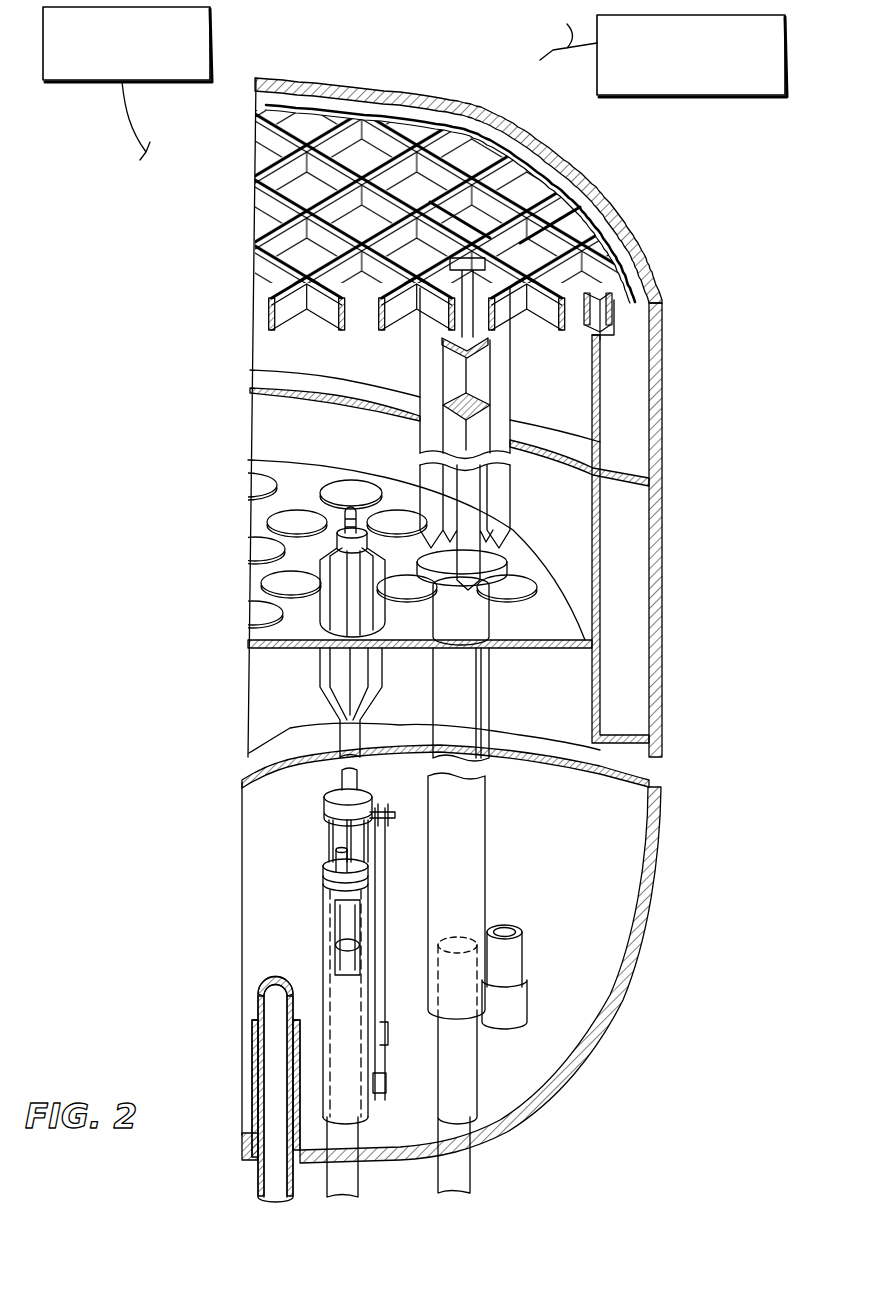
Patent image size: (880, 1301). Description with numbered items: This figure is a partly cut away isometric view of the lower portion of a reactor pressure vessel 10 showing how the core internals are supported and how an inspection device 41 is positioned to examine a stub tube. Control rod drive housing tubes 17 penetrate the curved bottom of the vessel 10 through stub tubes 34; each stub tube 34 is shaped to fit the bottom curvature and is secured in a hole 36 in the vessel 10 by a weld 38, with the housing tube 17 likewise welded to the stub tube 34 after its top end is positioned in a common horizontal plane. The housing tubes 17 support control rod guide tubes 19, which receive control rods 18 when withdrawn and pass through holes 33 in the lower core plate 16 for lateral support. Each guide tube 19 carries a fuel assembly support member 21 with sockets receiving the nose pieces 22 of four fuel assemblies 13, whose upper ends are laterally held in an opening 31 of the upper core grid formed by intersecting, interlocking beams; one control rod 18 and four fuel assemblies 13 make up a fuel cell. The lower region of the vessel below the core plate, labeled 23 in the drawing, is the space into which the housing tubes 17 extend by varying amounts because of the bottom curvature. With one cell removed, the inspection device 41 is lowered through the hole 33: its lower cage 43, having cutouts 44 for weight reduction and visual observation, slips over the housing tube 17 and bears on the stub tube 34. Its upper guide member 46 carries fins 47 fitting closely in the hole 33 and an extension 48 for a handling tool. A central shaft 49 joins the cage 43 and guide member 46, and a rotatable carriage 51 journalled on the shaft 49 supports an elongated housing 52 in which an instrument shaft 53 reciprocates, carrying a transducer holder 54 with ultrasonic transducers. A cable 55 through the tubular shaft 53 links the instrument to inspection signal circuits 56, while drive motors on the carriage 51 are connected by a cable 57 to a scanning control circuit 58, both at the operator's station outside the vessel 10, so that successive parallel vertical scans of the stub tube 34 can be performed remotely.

The pressure vessel 10 is at (662, 527).
The fuel assemblies 13 is at (510, 393).
The lower core plate 16 is at (250, 520).
The control rod drive housing tubes 17 is at (512, 950).
The control rods 18 is at (490, 352).
The control rod guide tubes 19 is at (488, 815).
The fuel assembly support member 21 is at (505, 550).
The nose pieces 22 is at (599, 518).
The lower plenum 23 is at (548, 862).
The opening 31 is at (258, 228).
The hole 33 is at (306, 596).
The stub tube 34 is at (516, 997).
The hole 36 is at (258, 1153).
The weld 38 is at (254, 1047).
The inspection device 41 is at (342, 976).
The cage 43 is at (329, 906).
The cutouts 44 is at (345, 932).
The upper guide member 46 is at (358, 779).
The fins 47 is at (322, 675).
The extension 48 is at (343, 522).
The central shaft 49 is at (334, 840).
The carriage 51 is at (333, 858).
The housing 52 is at (384, 958).
The instrument shaft 53 is at (373, 822).
The transducer holder 54 is at (386, 1083).
The cable 55 is at (565, 36).
The inspection signal circuits 56 is at (688, 97).
The cable 57 is at (130, 124).
The scanning control circuit 58 is at (210, 26).